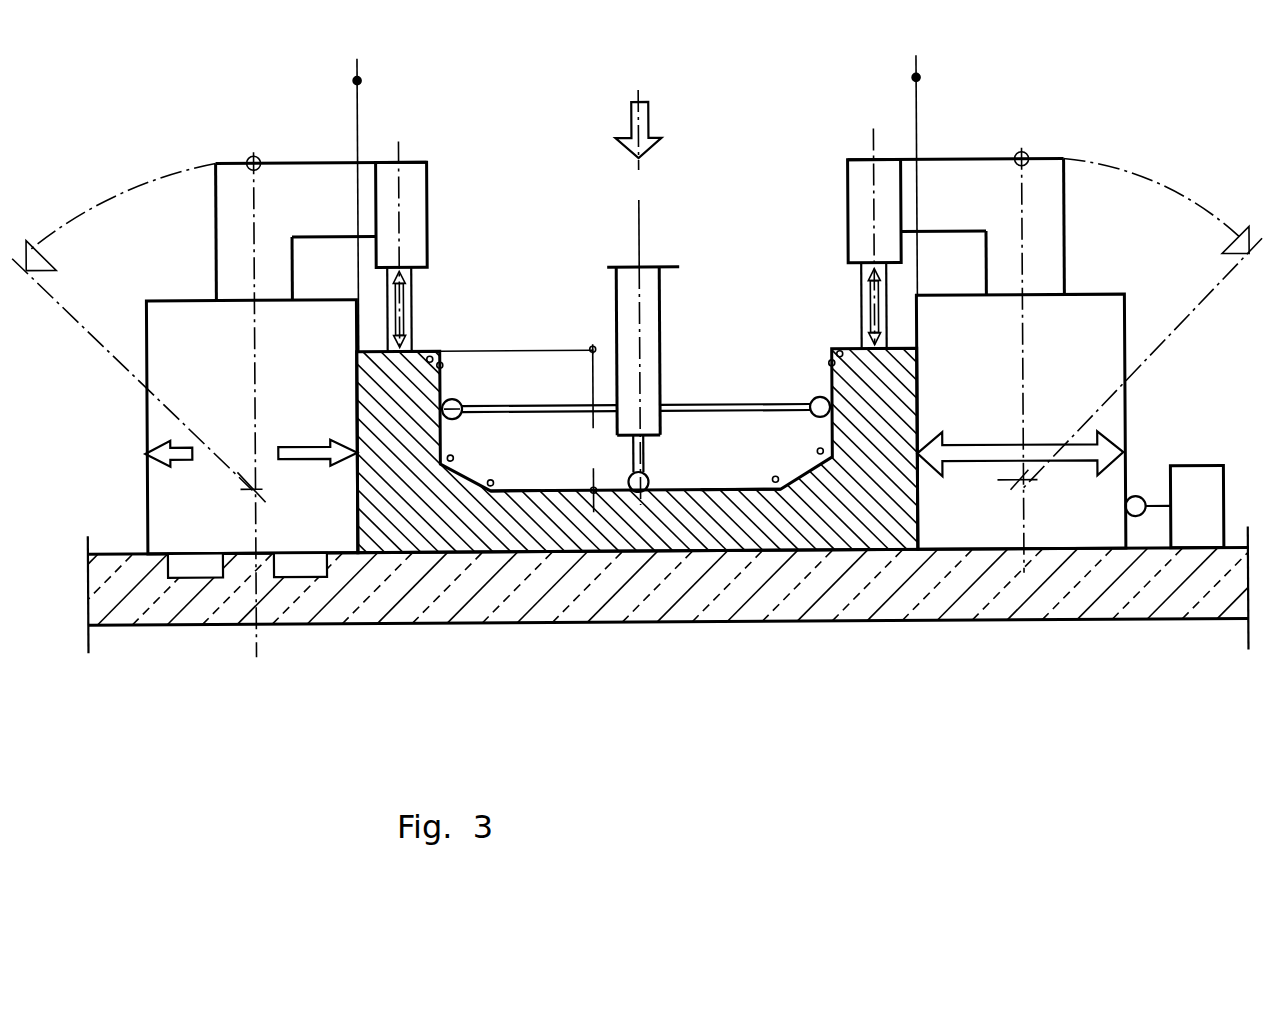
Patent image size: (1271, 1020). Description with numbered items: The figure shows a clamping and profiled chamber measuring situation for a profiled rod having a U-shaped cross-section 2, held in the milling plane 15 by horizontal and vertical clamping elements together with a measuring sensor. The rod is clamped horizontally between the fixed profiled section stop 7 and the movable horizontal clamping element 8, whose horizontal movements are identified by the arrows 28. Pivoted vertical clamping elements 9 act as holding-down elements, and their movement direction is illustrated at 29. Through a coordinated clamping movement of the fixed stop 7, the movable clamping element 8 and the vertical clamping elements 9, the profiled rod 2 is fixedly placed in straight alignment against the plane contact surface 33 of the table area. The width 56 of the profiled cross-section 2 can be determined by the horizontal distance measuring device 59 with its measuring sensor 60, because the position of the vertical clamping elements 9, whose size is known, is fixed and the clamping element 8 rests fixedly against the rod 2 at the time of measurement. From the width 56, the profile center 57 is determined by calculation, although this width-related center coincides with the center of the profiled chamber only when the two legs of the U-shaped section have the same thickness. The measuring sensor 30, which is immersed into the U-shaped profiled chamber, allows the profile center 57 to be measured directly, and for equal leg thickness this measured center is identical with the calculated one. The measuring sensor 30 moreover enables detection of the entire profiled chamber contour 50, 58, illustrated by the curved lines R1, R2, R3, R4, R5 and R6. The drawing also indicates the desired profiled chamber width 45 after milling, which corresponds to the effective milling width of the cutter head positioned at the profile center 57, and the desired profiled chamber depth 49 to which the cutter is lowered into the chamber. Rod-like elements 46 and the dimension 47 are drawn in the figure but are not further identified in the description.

The profiled rod having a U-shaped cross-section 2 is at (635, 450).
The fixed profiled section stop 7 is at (252, 439).
The movable horizontal clamping element 8 is at (1021, 421).
The vertical clamping element 9 is at (641, 402).
The milling plane 15 is at (638, 145).
The arrows indicating horizontal movements 28 is at (638, 330).
The movement direction of the vertical clamping elements 29 is at (412, 283).
The measuring sensor 30 is at (643, 386).
The plane contact surface 33 is at (655, 622).
The profiled chamber width after milling 45 is at (832, 364).
The workpiece support rod 46 is at (563, 413).
The cavity bottom width 47 is at (642, 460).
The profiled chamber depth 49 is at (593, 430).
The profiled chamber contour 50 is at (730, 490).
The width of the profiled cross-section 56 is at (340, 79).
The profile center 57 is at (640, 216).
The profiled chamber contour 58 is at (515, 490).
The horizontal distance measuring device 59 is at (1174, 507).
The measuring sensor 60 is at (1142, 519).
The curved line R1 is at (444, 350).
The curved line R2 is at (436, 465).
The curved line R3 is at (488, 496).
The curved line R4 is at (828, 350).
The curved line R5 is at (837, 460).
The curved line R6 is at (782, 496).